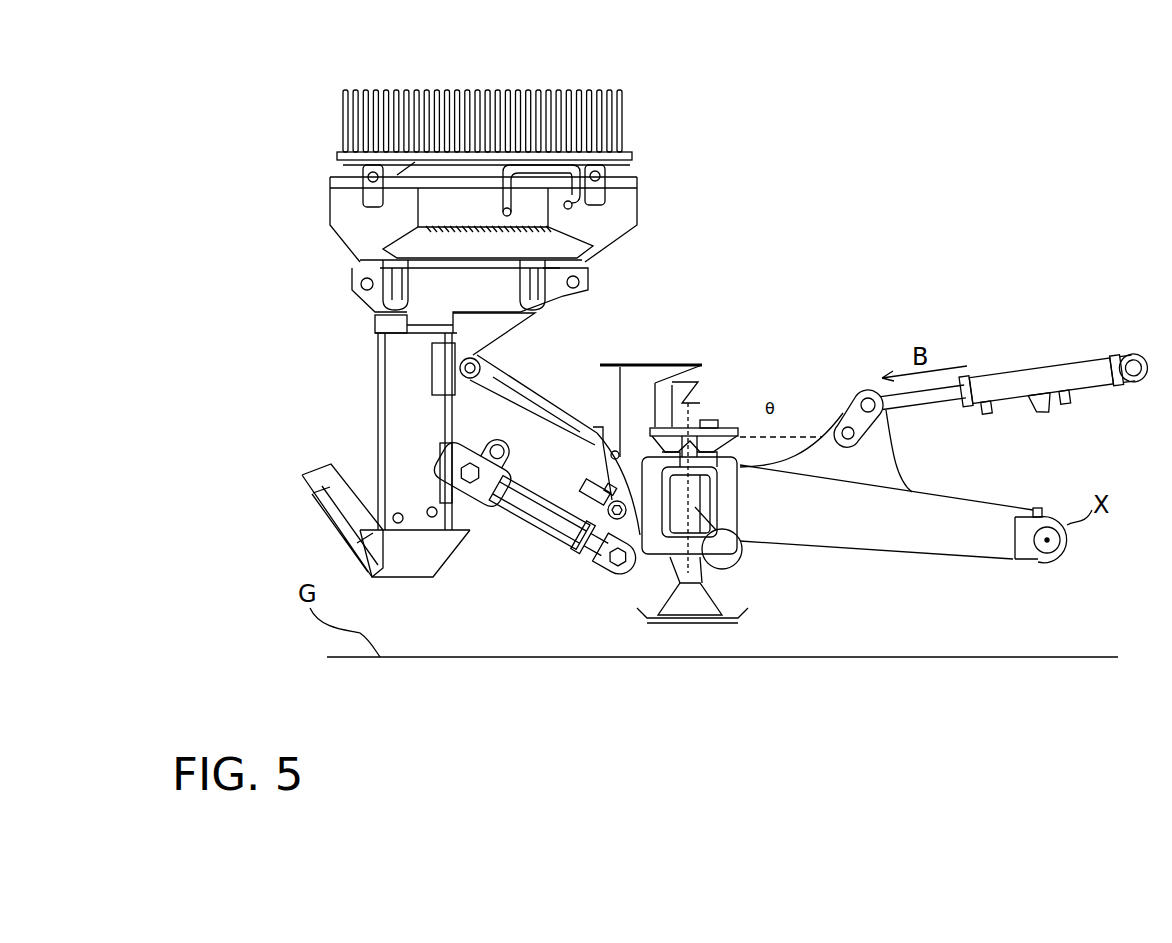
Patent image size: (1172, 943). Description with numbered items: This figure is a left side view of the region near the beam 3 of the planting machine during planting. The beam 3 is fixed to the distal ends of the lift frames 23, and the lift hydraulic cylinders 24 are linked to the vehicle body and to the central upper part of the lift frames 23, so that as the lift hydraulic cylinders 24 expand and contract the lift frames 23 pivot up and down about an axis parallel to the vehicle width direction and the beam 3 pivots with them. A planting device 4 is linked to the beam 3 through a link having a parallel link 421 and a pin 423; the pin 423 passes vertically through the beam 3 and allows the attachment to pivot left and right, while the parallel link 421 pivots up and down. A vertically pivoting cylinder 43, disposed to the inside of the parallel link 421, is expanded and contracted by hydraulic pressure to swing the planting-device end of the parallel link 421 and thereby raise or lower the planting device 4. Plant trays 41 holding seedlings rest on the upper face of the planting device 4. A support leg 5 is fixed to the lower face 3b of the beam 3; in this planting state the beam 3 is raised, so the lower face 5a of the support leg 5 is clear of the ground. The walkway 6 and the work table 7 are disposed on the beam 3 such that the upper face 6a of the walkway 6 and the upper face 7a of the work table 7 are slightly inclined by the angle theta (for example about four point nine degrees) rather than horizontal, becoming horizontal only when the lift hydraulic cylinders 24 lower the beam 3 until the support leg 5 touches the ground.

The plant tray 41 is at (358, 118).
The planting device 4 is at (397, 425).
The vertically pivoting cylinder 43 is at (535, 465).
The parallel link 421 is at (563, 537).
The work table 7 is at (602, 363).
The upper face of work table 7a is at (668, 368).
The walkway 6 is at (745, 437).
The upper face of walkway 6a is at (700, 434).
The beam 3 is at (725, 492).
The pin 423 is at (742, 541).
The lower face of beam 3b is at (705, 568).
The support leg 5 is at (680, 607).
The lower face of support leg 5a is at (658, 624).
The lift frame 23 is at (906, 534).
The lift hydraulic cylinder 24 is at (1023, 385).